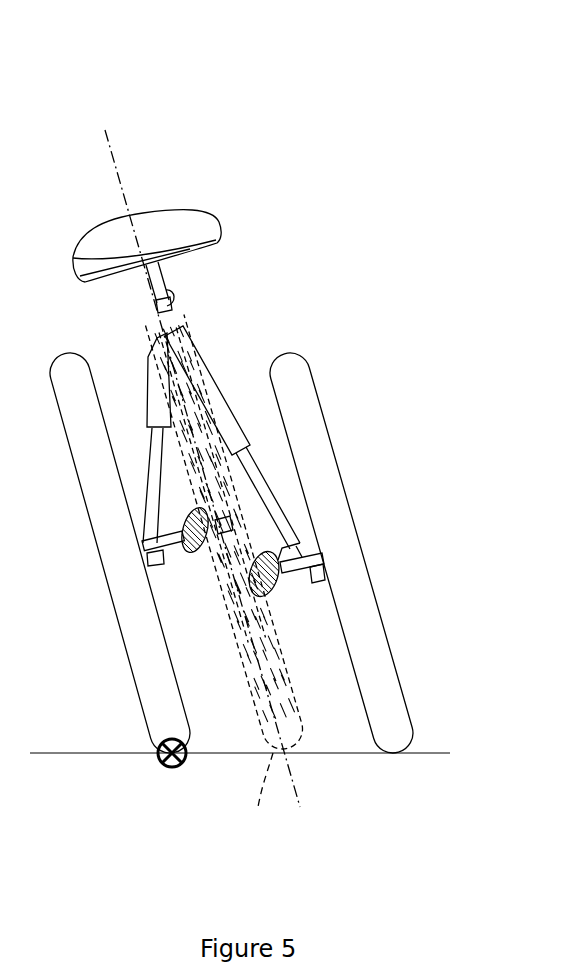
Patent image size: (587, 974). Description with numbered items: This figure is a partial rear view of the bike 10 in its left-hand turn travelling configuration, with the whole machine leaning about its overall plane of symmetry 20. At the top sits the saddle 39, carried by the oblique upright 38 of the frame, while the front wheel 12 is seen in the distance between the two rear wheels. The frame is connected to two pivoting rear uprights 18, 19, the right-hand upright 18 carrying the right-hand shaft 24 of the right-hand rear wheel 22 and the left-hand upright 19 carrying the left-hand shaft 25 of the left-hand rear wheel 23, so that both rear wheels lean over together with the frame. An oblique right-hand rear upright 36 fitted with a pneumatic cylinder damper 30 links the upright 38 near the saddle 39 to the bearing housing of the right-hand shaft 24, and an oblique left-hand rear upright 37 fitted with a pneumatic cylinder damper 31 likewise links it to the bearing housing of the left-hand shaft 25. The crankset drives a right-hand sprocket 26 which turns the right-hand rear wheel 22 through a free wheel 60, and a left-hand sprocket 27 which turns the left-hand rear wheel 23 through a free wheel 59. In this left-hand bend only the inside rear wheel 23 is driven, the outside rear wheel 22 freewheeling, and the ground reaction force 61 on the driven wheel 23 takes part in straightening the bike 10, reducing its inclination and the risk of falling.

The bike 10 is at (277, 84).
The front wheel 12 is at (262, 803).
The pivoting rear upright 18 is at (318, 572).
The pivoting rear upright 19 is at (145, 560).
The plane of symmetry 20 is at (115, 162).
The rear wheel 22 is at (390, 737).
The rear wheel 23 is at (130, 625).
The right-hand shaft 24 is at (318, 560).
The left-hand shaft 25 is at (140, 542).
The right-hand sprocket 26 is at (271, 590).
The left-hand sprocket 27 is at (192, 565).
The pneumatic cylinder damper 30 is at (220, 397).
The pneumatic cylinder damper 31 is at (157, 393).
The oblique right-hand rear upright 36 is at (272, 497).
The oblique left-hand rear upright 37 is at (155, 450).
The oblique upright 38 is at (270, 548).
The saddle 39 is at (122, 243).
The free wheel 59 is at (185, 518).
The free wheel 60 is at (280, 573).
The force 61 is at (160, 755).